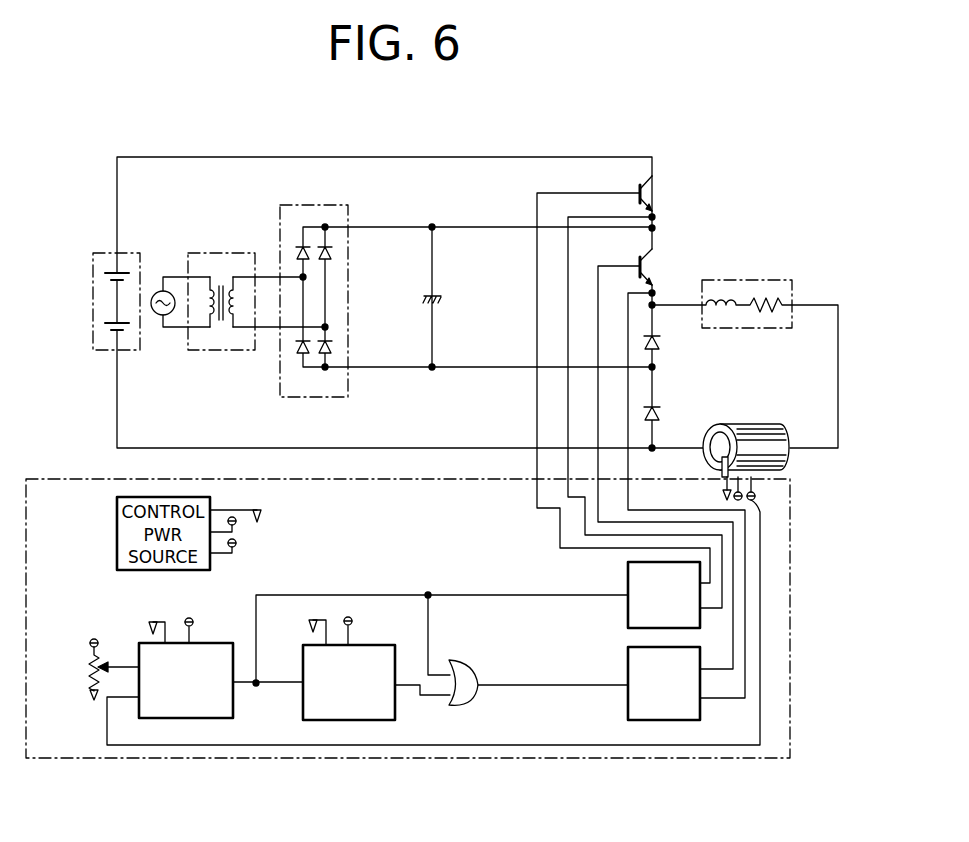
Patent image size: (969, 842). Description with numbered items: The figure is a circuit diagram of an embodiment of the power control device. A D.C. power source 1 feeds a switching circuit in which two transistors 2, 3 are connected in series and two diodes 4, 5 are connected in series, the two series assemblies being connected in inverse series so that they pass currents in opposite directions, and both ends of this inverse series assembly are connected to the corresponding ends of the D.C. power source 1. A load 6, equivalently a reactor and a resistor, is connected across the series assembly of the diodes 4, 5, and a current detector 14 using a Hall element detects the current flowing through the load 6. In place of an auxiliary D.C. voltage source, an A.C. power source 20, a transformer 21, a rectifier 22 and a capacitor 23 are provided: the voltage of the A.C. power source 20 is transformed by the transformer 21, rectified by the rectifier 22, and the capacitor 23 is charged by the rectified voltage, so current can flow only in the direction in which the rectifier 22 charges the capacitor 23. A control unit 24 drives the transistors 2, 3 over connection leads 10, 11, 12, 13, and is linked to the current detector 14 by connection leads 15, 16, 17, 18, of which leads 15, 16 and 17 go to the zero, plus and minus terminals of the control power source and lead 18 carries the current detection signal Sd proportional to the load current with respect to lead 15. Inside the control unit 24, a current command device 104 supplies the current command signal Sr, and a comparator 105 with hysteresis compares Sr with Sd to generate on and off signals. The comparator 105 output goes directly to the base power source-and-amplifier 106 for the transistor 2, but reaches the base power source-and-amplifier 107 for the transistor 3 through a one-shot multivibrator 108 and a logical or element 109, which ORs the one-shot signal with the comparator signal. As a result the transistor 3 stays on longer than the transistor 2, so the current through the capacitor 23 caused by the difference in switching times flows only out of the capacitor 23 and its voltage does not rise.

The D.C. power source 1 is at (93, 268).
The transistor 2 is at (654, 192).
The transistor 3 is at (654, 262).
The diode 4 is at (662, 341).
The diode 5 is at (662, 412).
The load 6 is at (772, 280).
The connection lead 10 is at (537, 403).
The connection lead 11 is at (568, 410).
The connection lead 12 is at (598, 410).
The connection lead 13 is at (628, 410).
The current detector 14 is at (752, 425).
The connection lead 15 is at (725, 488).
The connection lead 16 is at (723, 478).
The connection lead 17 is at (756, 492).
The connection lead 18 is at (770, 477).
The A.C. power source 20 is at (163, 318).
The transformer 21 is at (212, 350).
The rectifier 22 is at (340, 205).
The capacitor 23 is at (425, 299).
The control unit 24 is at (792, 572).
The current command device 104 is at (93, 608).
The comparator 105 is at (154, 619).
The base power source-and-amplifier 106 is at (628, 608).
The base power source-and-amplifier 107 is at (628, 700).
The one-shot multivibrator 108 is at (311, 620).
The logical or element 109 is at (466, 666).